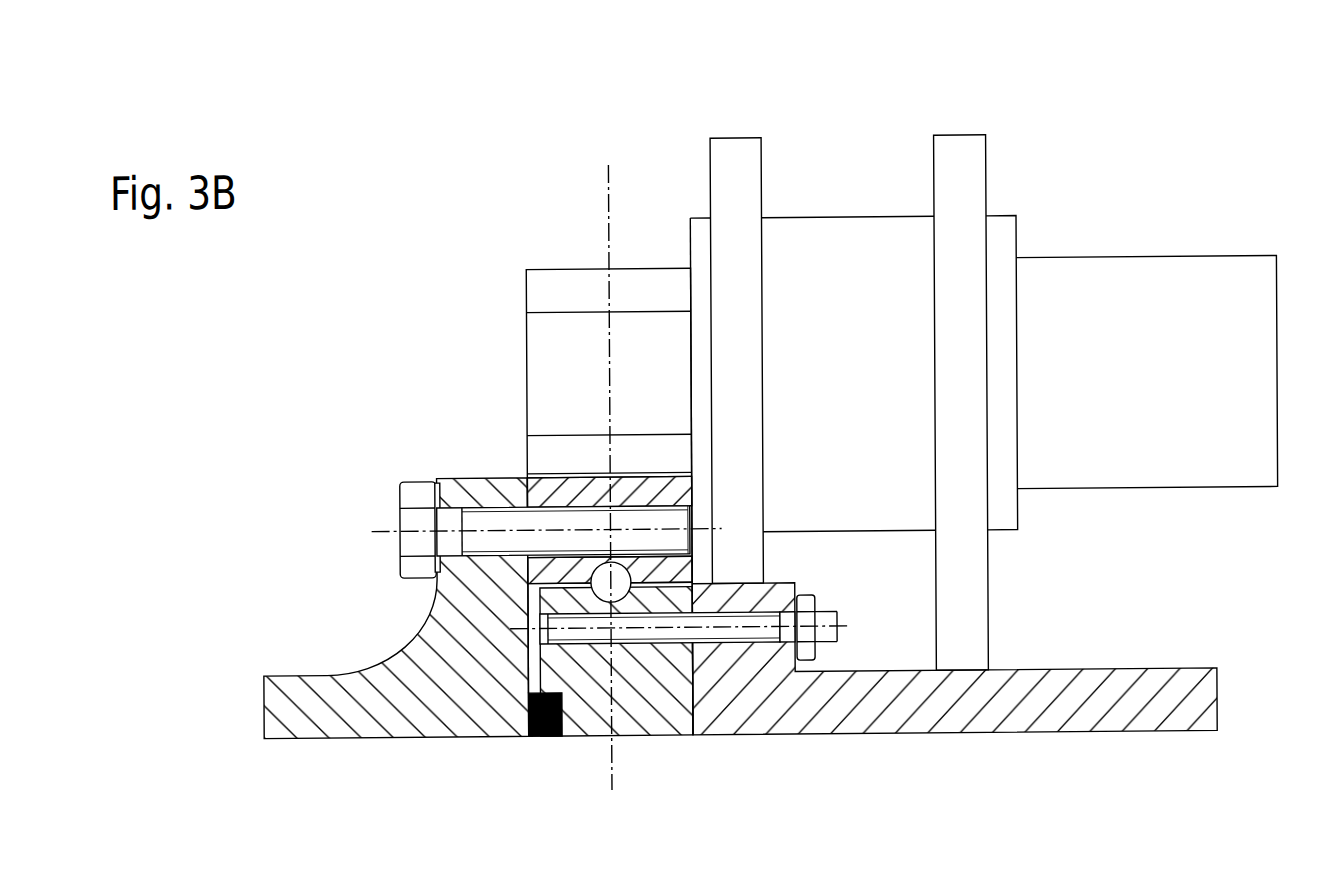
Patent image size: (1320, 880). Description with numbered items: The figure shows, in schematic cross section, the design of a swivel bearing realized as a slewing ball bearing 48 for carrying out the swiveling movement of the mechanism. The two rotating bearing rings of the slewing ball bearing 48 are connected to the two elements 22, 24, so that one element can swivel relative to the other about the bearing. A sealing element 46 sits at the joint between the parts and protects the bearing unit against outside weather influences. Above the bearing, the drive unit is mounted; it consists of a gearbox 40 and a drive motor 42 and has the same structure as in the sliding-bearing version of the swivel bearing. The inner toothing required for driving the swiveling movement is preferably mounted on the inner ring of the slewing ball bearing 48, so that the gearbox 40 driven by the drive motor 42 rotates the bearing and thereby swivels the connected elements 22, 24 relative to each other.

The element 22 is at (476, 686).
The element 24 is at (916, 690).
The gearbox 40 is at (842, 244).
The drive motor 42 is at (1069, 285).
The sealing element 46 is at (559, 738).
The slewing ball bearing 48 is at (654, 692).